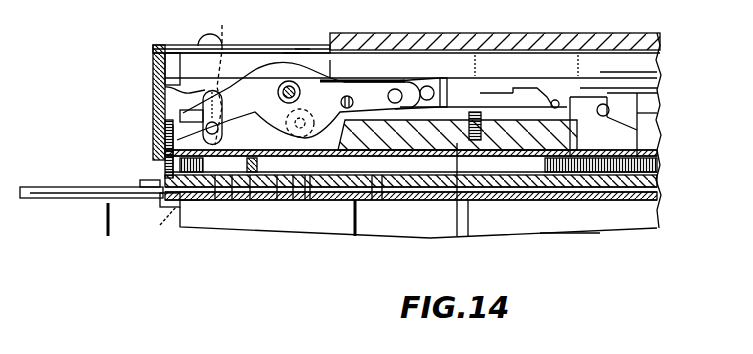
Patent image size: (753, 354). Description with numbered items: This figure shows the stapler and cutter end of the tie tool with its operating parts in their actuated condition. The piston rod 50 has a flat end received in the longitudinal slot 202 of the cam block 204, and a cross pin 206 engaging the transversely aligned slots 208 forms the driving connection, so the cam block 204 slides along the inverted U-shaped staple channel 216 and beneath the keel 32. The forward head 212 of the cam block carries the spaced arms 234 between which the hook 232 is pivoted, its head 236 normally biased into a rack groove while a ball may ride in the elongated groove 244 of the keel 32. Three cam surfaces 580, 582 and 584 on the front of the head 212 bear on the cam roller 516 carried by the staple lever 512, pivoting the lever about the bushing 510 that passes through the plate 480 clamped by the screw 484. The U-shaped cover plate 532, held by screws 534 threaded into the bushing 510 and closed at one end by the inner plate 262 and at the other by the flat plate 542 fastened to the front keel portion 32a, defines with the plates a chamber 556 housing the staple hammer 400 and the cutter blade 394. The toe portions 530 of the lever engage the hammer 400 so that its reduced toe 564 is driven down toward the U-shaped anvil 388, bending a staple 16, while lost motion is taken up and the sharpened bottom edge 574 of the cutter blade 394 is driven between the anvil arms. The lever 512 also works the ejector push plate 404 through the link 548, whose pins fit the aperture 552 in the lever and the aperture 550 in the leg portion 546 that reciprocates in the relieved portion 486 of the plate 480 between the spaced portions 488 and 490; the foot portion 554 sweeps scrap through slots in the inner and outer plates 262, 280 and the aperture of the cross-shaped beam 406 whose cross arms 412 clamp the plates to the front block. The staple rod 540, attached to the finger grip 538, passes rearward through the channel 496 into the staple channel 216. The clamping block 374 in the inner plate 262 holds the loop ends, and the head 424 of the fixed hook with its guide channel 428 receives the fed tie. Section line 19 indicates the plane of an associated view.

The keel 32 is at (495, 36).
The front end portion of the keel 32a is at (316, 33).
The cover plate 532 is at (217, 43).
The staple hammer 400 is at (134, 102).
The chamber 556 is at (184, 50).
The toe portions 530 is at (154, 86).
The plate 480 is at (153, 110).
The spaced portion 488 is at (138, 148).
The finger grip 538 is at (138, 151).
The reduced toe portion of the hammer 564 is at (132, 173).
The head of the fixed hook 424 is at (91, 179).
The guide channel 428 is at (92, 208).
The anvil 388 is at (148, 209).
The sharpened bottom edge 574 is at (150, 225).
The section line 19 is at (234, 230).
The foot portion 554 is at (168, 230).
The ejector push plate 404 is at (204, 214).
The leg portion 546 is at (214, 223).
The clamping block 374 is at (232, 232).
The spaced portion 490 is at (260, 240).
The relieved portion 486 is at (315, 237).
The channel 496 is at (323, 228).
The screw 484 is at (323, 218).
The cam surface 580 is at (398, 218).
The cross arms 412 is at (394, 226).
The cam surface 582 is at (443, 201).
The head of the cam block 212 is at (488, 229).
The cam surface 584 is at (439, 183).
The staple rod 540 is at (484, 183).
The cam block 204 is at (533, 183).
The cross-shaped beam 406 is at (573, 244).
The aperture 552 is at (229, 72).
The screws 534 is at (298, 79).
The flat plate 542 is at (308, 26).
The staple lever 512 is at (355, 66).
The link 548 is at (268, 92).
The bushing 510 is at (319, 111).
The cam roller 516 is at (417, 82).
The spaced arms 234 is at (462, 60).
The hook 232 is at (519, 56).
The head of the hook 236 is at (539, 81).
The longitudinal slot 202 is at (603, 106).
The cross pin 206 is at (661, 125).
The elongated groove 244 is at (657, 66).
The transversely aligned slots 208 is at (647, 87).
The piston rod 50 is at (670, 111).
The staple channel 216 is at (439, 152).
The staple 16 is at (623, 169).
The inner plate 262 is at (439, 188).
The outer plate 280 is at (439, 207).
The aperture 550 is at (230, 127).
The cutter blade 394 is at (218, 169).